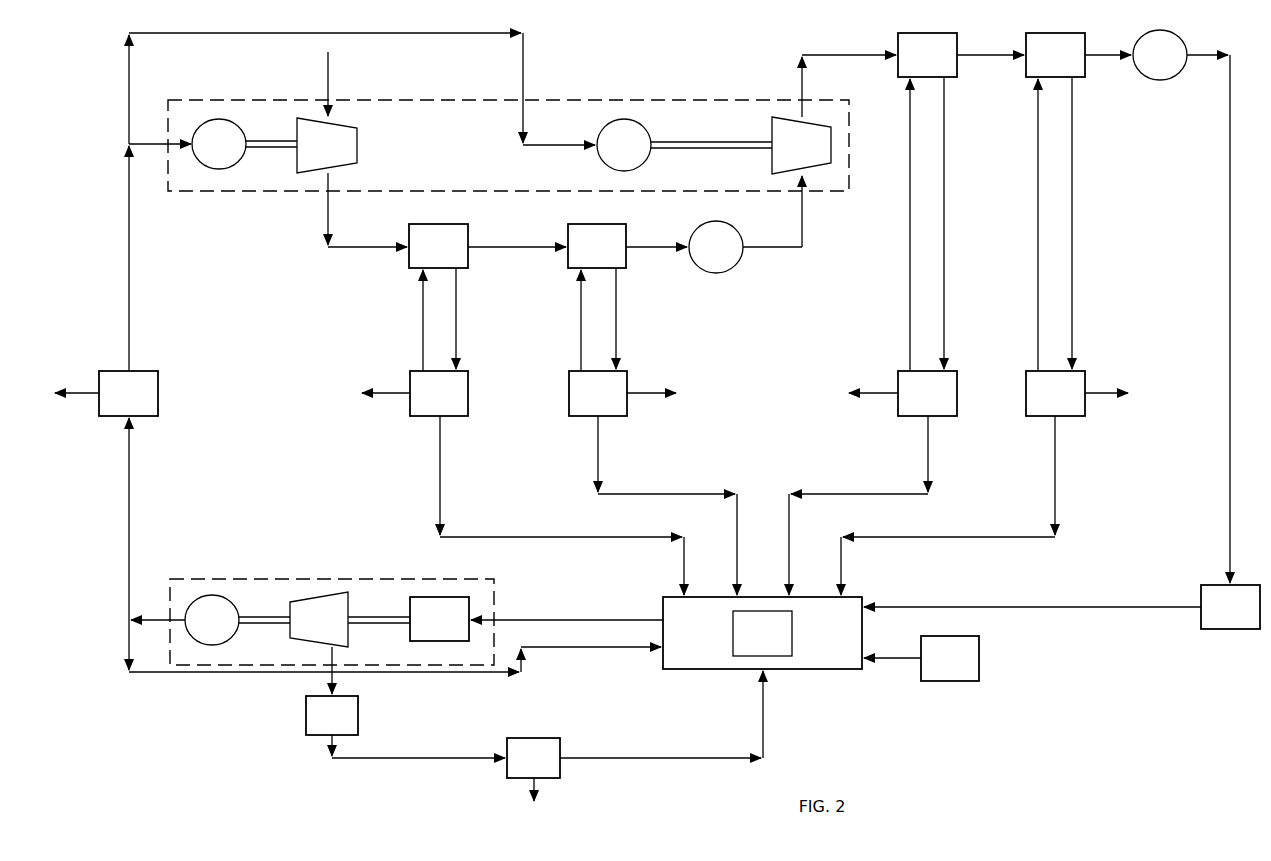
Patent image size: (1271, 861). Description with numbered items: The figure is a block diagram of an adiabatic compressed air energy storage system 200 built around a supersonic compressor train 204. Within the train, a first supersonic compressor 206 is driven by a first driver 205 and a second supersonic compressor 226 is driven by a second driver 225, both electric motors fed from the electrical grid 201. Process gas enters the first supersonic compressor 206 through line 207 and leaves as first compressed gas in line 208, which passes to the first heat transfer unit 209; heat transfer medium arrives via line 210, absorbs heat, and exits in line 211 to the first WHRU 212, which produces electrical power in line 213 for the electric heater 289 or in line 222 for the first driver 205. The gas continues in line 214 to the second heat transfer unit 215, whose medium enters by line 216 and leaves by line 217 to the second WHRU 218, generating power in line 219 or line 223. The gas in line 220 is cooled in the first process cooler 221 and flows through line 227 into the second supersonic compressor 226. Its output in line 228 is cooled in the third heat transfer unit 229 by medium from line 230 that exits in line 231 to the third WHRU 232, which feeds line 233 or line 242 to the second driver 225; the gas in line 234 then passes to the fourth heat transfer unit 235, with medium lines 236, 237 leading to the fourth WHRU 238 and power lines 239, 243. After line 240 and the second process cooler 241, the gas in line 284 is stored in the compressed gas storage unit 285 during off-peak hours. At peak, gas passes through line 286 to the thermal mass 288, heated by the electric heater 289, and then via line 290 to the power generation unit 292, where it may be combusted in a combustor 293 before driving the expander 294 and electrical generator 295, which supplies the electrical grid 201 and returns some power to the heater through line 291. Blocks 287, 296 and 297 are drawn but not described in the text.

The adiabatic CAES system 200 is at (1130, 684).
The electrical grid 201 is at (117, 403).
The supersonic compressor train 204 is at (222, 192).
The first driver 205 is at (207, 157).
The first supersonic compressor 206 is at (315, 157).
The line 207 is at (331, 61).
The line 208 is at (364, 246).
The first heat transfer unit 209 is at (426, 256).
The line 210 is at (423, 299).
The line 211 is at (456, 295).
The first WHRU 212 is at (427, 403).
The line 213 is at (440, 448).
The line 214 is at (510, 246).
The second heat transfer unit 215 is at (585, 256).
The line 216 is at (581, 332).
The line 217 is at (616, 301).
The second WHRU 218 is at (586, 403).
The line 219 is at (598, 448).
The line 220 is at (652, 246).
The first process cooler 221 is at (704, 260).
The line 222 is at (388, 390).
The line 223 is at (642, 390).
The second driver 225 is at (612, 158).
The second supersonic compressor 226 is at (789, 157).
The line 227 is at (768, 246).
The line 228 is at (802, 83).
The third heat transfer unit 229 is at (915, 65).
The line 230 is at (910, 234).
The line 231 is at (944, 268).
The third WHRU 232 is at (915, 403).
The line 233 is at (928, 448).
The line 234 is at (989, 60).
The fourth heat transfer unit 235 is at (1043, 65).
The line 236 is at (1038, 212).
The line 237 is at (1072, 212).
The fourth WHRU 238 is at (1043, 403).
The line 239 is at (1055, 448).
The line 240 is at (1100, 60).
The second process cooler 241 is at (1148, 68).
The line 242 is at (876, 390).
The line 243 is at (1096, 390).
The line 284 is at (1230, 212).
The compressed gas storage unit 285 is at (1218, 617).
The line 286 is at (1153, 605).
The supply unit 287 is at (938, 668).
The thermal mass 288 is at (823, 672).
The electric heater 289 is at (750, 644).
The line 290 is at (531, 617).
The line 291 is at (442, 675).
The power generation unit 292 is at (340, 578).
The combustor 293 is at (427, 629).
The expander 294 is at (307, 630).
The electrical generator 295 is at (200, 633).
The separator 296 is at (320, 725).
The unit 297 is at (521, 768).